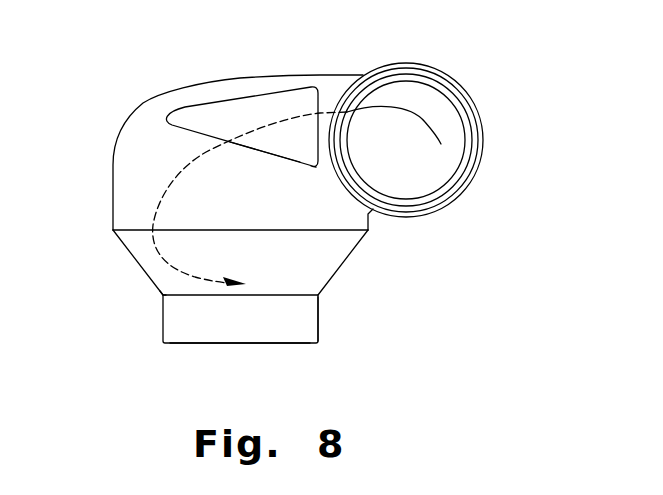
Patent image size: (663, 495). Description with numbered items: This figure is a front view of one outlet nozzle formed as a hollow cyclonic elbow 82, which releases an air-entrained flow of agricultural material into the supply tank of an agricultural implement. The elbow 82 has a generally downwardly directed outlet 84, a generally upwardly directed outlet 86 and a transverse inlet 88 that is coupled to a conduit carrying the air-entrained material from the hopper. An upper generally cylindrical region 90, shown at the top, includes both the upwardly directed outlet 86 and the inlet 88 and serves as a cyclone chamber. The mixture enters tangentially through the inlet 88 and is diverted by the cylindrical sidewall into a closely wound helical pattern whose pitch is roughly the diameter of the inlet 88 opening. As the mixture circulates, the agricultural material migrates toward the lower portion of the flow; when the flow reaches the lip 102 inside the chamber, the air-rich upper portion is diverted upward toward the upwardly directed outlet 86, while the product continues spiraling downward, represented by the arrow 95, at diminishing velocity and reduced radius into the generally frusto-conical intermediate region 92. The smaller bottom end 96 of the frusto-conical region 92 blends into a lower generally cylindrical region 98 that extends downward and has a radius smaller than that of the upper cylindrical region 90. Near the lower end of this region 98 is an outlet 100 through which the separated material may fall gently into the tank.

The cyclonic elbow 82 is at (434, 227).
The downwardly directed outlet 84 is at (220, 322).
The upwardly directed outlet 86 is at (276, 122).
The transverse inlet 88 is at (425, 166).
The upper cylindrical region 90 is at (112, 205).
The frusto-conical intermediate region 92 is at (150, 277).
The product flow arrow 95 is at (152, 239).
The smaller bottom end 96 is at (162, 295).
The lower cylindrical region 98 is at (303, 327).
The outlet 100 is at (282, 343).
The lip 102 is at (268, 143).